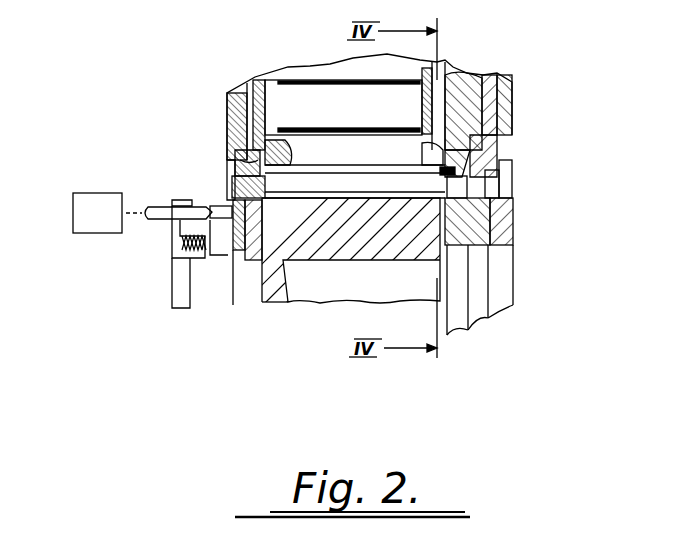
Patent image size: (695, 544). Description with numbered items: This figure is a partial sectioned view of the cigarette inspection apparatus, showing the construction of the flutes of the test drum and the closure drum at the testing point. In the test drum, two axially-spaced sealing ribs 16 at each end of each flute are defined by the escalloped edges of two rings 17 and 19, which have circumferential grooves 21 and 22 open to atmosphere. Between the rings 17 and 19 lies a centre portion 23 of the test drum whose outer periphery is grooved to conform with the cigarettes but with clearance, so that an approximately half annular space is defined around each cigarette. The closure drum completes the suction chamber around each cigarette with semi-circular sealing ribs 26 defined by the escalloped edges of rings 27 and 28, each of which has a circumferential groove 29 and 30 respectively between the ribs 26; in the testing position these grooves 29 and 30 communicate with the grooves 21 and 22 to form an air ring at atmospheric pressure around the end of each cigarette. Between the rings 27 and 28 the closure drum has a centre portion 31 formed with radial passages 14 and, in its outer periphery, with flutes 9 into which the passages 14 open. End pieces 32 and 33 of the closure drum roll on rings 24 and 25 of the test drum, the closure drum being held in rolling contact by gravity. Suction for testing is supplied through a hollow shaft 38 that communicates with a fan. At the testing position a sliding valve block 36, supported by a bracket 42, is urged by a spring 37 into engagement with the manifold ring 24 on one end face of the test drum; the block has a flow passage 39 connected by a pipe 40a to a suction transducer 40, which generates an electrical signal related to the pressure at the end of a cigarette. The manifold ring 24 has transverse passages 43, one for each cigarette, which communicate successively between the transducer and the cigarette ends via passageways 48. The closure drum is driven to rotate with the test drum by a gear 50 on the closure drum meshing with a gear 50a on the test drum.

The flutes 9 is at (265, 170).
The radial passages 14 is at (334, 137).
The sealing ribs 16 is at (513, 213).
The ring 17 is at (240, 262).
The ring 19 is at (463, 248).
The circumferential groove 21 is at (290, 192).
The circumferential groove 22 is at (513, 230).
The centre portion 23 is at (318, 260).
The manifold ring 24 is at (257, 262).
The ring 25 is at (480, 162).
The semi-circular sealing ribs 26 is at (270, 162).
The ring 27 is at (240, 152).
The ring 28 is at (462, 152).
The circumferential groove 29 is at (236, 176).
The circumferential groove 30 is at (440, 170).
The centre portion 31 is at (431, 127).
The end piece 32 is at (228, 162).
The end piece 33 is at (471, 84).
The sliding valve block 36 is at (218, 258).
The spring 37 is at (171, 263).
The hollow shaft 38 is at (509, 245).
The flow passage 39 is at (180, 225).
The suction transducer 40 is at (74, 203).
The pipe 40a is at (150, 207).
The bracket 42 is at (178, 280).
The transverse passages 43 is at (228, 262).
The passageways 48 is at (222, 201).
The gear 50 is at (500, 172).
The gear 50a is at (513, 180).